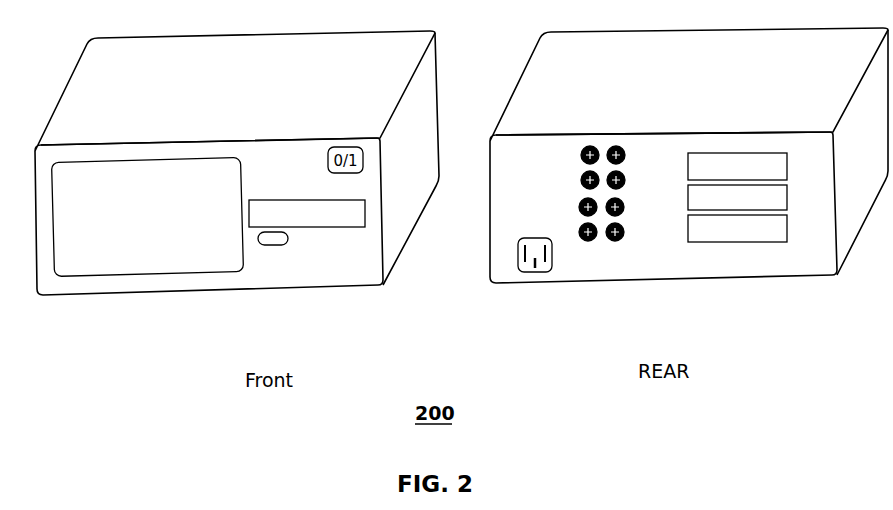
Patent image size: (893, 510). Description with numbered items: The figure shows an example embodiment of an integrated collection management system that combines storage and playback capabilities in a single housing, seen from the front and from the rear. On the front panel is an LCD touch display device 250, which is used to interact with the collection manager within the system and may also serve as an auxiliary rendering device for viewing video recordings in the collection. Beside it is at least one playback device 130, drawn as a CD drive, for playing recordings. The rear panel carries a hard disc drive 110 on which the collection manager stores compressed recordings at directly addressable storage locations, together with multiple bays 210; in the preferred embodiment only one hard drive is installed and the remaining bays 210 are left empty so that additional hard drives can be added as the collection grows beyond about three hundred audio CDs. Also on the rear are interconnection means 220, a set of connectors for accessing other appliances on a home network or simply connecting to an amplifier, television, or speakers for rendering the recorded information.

The LCD touch display device 250 is at (145, 257).
The playback device 130 is at (342, 215).
The hard disc drive 110 is at (708, 167).
The bays 210 is at (688, 222).
The interconnection means 220 is at (625, 212).